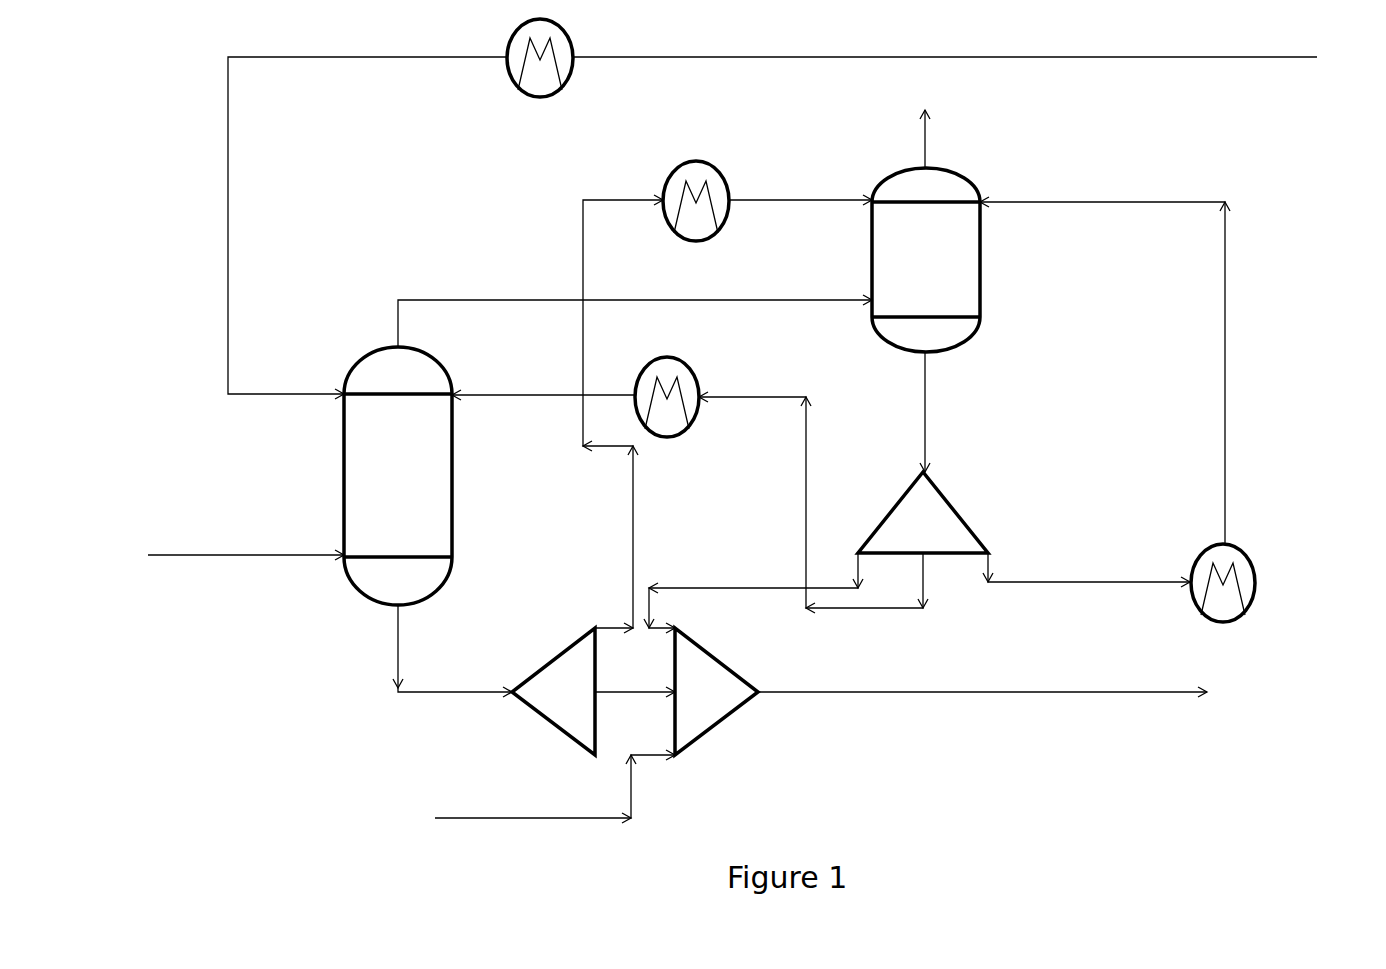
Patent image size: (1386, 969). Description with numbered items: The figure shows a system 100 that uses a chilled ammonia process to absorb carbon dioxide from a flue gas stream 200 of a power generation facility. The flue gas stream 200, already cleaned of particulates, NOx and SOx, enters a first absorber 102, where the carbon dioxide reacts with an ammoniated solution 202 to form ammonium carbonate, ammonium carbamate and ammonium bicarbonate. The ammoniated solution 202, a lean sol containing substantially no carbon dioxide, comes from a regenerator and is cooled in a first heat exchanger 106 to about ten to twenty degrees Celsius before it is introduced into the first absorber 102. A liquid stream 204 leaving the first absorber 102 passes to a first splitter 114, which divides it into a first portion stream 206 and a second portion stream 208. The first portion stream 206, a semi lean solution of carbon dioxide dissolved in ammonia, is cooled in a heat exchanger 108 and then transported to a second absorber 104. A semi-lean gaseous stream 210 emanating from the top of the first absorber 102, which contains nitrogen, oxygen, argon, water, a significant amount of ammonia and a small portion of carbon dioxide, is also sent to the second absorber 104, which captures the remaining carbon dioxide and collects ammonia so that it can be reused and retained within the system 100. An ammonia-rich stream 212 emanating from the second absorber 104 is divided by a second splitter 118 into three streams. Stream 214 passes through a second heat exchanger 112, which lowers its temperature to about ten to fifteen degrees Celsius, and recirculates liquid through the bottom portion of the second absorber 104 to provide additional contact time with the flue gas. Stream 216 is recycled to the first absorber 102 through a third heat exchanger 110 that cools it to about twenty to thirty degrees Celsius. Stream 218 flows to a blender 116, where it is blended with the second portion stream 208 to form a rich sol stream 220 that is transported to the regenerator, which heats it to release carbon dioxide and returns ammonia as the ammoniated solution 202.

The system 100 is at (1265, 300).
The first absorber 102 is at (452, 492).
The second absorber 104 is at (963, 273).
The first heat exchanger 106 is at (554, 72).
The heat exchanger 108 is at (717, 183).
The third heat exchanger 110 is at (695, 423).
The second heat exchanger 112 is at (1255, 573).
The first splitter 114 is at (527, 702).
The blender 116 is at (727, 707).
The second splitter 118 is at (937, 508).
The flue gas stream 200 is at (246, 550).
The ammoniated solution 202 is at (853, 60).
The liquid stream 204 is at (395, 651).
The first portion stream 206 is at (632, 562).
The second portion stream 208 is at (648, 696).
The semi-lean gaseous stream 210 is at (467, 298).
The stream 212 is at (926, 395).
The stream 214 is at (1226, 408).
The stream 216 is at (806, 445).
The stream 218 is at (772, 593).
The rich sol stream 220 is at (1030, 692).